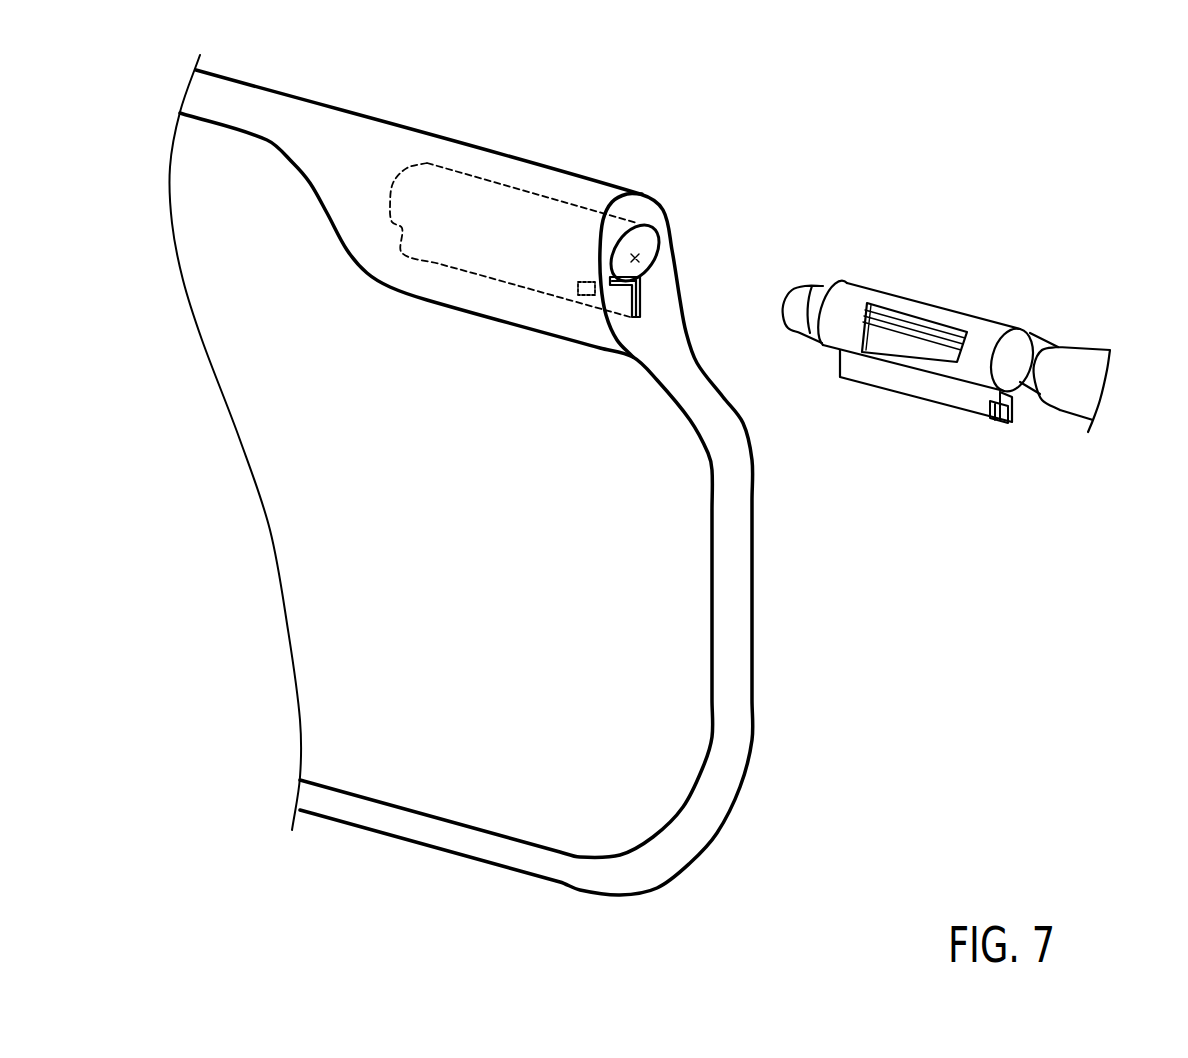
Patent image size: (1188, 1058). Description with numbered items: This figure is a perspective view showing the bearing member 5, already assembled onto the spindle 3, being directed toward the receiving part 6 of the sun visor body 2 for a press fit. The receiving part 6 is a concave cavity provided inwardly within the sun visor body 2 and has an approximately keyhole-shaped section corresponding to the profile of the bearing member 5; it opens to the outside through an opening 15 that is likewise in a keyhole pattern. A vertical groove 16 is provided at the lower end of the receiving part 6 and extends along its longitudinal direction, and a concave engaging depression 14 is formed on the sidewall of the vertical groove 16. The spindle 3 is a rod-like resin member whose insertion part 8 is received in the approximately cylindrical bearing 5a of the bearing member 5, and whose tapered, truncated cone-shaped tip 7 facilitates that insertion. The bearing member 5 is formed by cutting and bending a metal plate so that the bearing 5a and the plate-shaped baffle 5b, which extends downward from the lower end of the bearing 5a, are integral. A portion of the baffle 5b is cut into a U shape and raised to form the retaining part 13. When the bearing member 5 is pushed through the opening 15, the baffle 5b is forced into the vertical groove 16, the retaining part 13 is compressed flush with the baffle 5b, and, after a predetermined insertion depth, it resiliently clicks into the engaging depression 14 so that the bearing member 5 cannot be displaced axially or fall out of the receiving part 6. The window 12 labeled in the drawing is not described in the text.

The sun visor body 2 is at (635, 623).
The spindle 3 is at (1070, 377).
The bearing member 5 is at (972, 296).
The bearing 5a is at (833, 323).
The baffle 5b is at (913, 383).
The receiving part 6 is at (460, 173).
The tip 7 is at (802, 297).
The insertion part 8 is at (1028, 358).
The window opening 12 is at (880, 348).
The retaining part 13 is at (997, 423).
The engaging depression 14 is at (587, 285).
The opening 15 is at (636, 252).
The vertical groove 16 is at (638, 294).